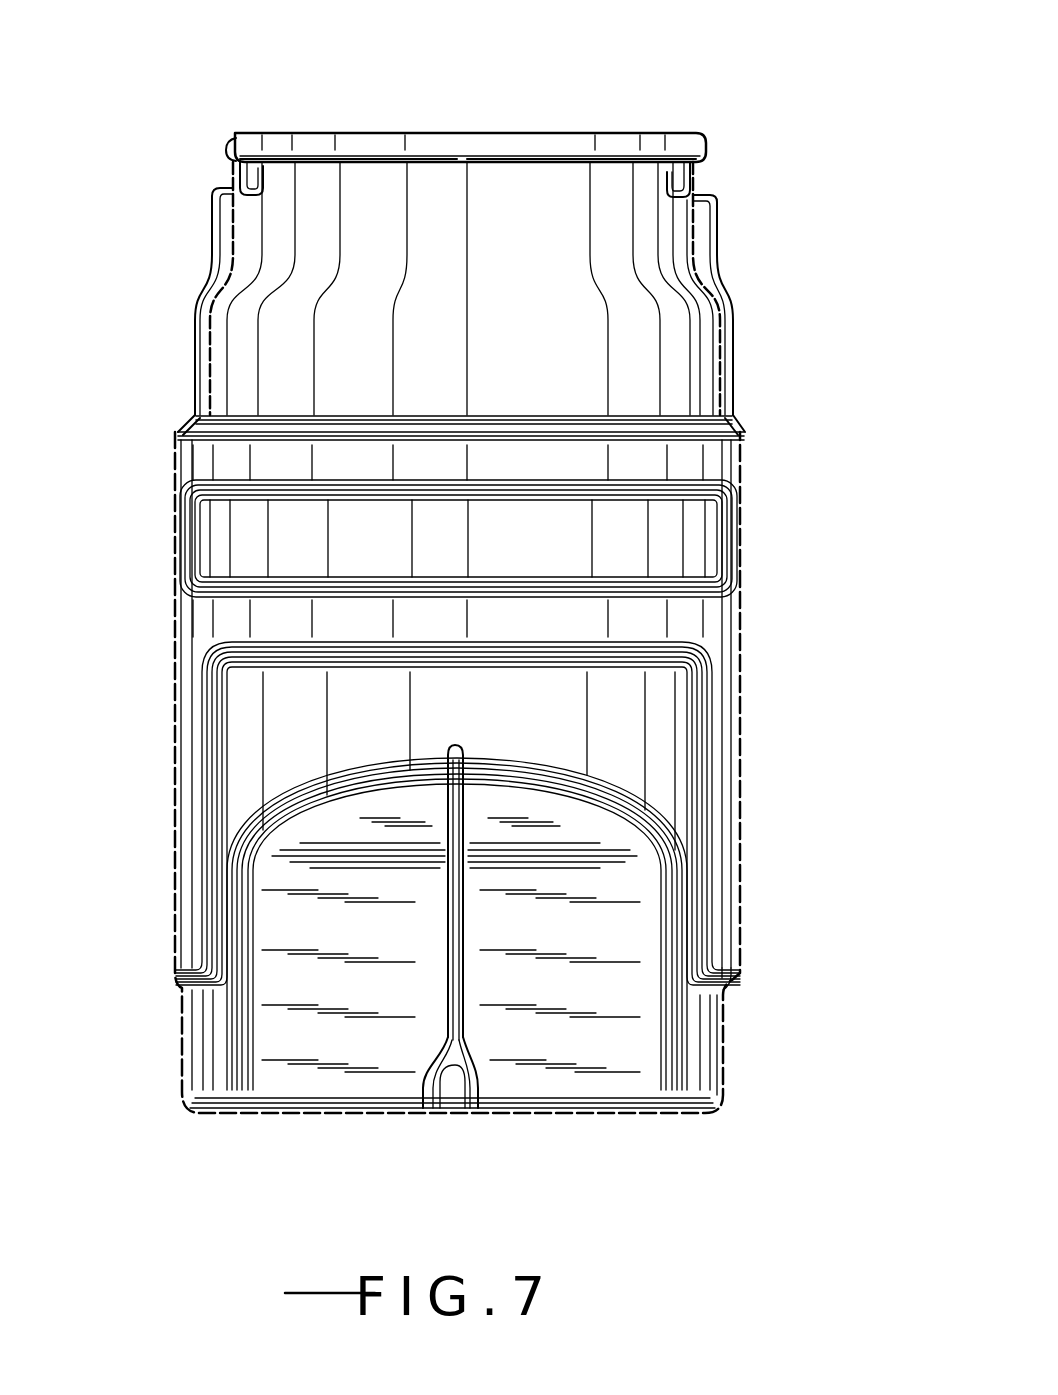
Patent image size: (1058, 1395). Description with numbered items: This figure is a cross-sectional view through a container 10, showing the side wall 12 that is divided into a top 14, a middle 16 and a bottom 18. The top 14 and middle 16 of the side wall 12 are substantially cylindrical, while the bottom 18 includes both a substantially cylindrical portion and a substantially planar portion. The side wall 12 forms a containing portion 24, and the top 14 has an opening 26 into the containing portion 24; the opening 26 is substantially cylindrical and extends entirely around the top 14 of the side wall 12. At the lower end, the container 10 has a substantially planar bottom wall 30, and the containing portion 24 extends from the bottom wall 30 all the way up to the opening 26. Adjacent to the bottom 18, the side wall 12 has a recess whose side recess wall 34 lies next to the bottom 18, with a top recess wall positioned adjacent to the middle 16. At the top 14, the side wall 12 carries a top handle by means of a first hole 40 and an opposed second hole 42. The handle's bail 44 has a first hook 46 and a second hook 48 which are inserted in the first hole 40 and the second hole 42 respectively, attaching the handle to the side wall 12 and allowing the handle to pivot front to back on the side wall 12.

The container 10 is at (619, 95).
The side wall 12 is at (737, 400).
The top 14 is at (694, 142).
The middle 16 is at (745, 627).
The bottom 18 is at (724, 1097).
The containing portion 24 is at (347, 378).
The opening 26 is at (237, 133).
The bottom wall 30 is at (287, 1112).
The side recess wall 34 is at (558, 1040).
The first hole 40 is at (684, 187).
The second hole 42 is at (240, 187).
The bail 44 is at (717, 247).
The first hook 46 is at (663, 187).
The second hook 48 is at (262, 183).